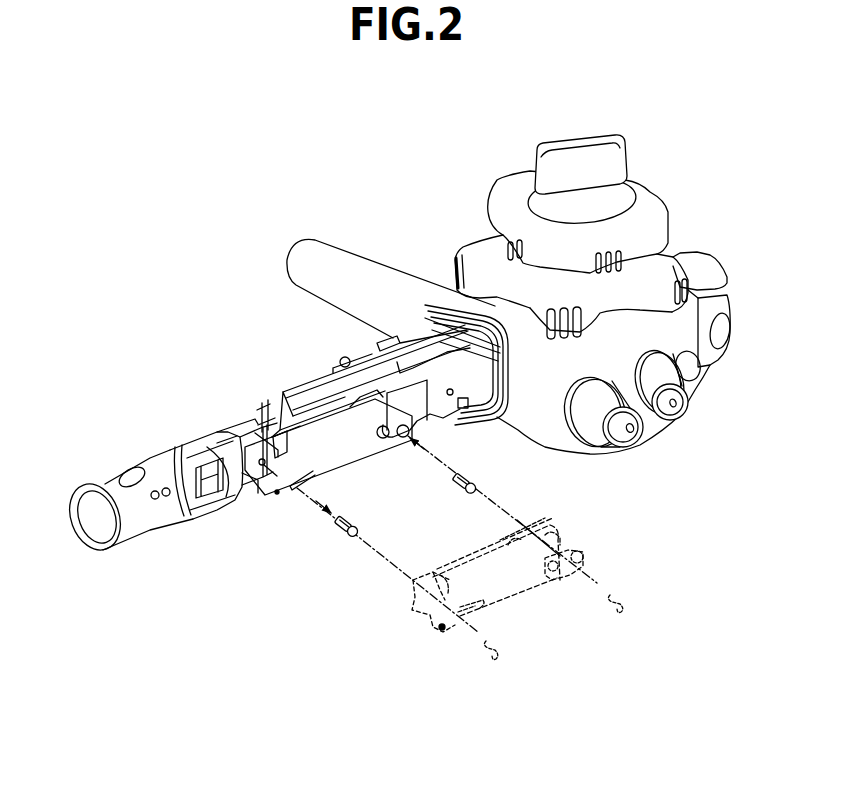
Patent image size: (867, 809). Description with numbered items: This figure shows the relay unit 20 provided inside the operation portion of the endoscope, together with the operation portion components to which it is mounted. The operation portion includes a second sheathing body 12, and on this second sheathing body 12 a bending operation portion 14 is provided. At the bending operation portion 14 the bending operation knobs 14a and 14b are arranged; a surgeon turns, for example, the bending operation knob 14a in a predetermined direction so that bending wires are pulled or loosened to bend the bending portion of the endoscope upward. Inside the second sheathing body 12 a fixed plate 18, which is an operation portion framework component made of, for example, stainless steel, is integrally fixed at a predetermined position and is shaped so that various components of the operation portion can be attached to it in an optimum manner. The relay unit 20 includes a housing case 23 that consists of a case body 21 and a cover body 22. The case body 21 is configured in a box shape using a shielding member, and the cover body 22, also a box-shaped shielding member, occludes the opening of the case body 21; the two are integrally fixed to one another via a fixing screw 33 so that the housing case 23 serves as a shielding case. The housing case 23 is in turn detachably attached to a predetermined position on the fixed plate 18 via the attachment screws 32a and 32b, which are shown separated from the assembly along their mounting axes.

The second sheathing body 12 is at (541, 433).
The bending operation portion 14 is at (397, 110).
The bending operation knob 14a is at (483, 252).
The bending operation knob 14b is at (512, 205).
The fixed plate 18 is at (242, 435).
The relay unit 20 is at (283, 512).
The case body 21 is at (510, 527).
The cover body 22 is at (555, 543).
The housing case 23 is at (630, 467).
The attachment screw 32a is at (347, 533).
The attachment screw 32b is at (467, 490).
The fixing screw 33 is at (400, 440).